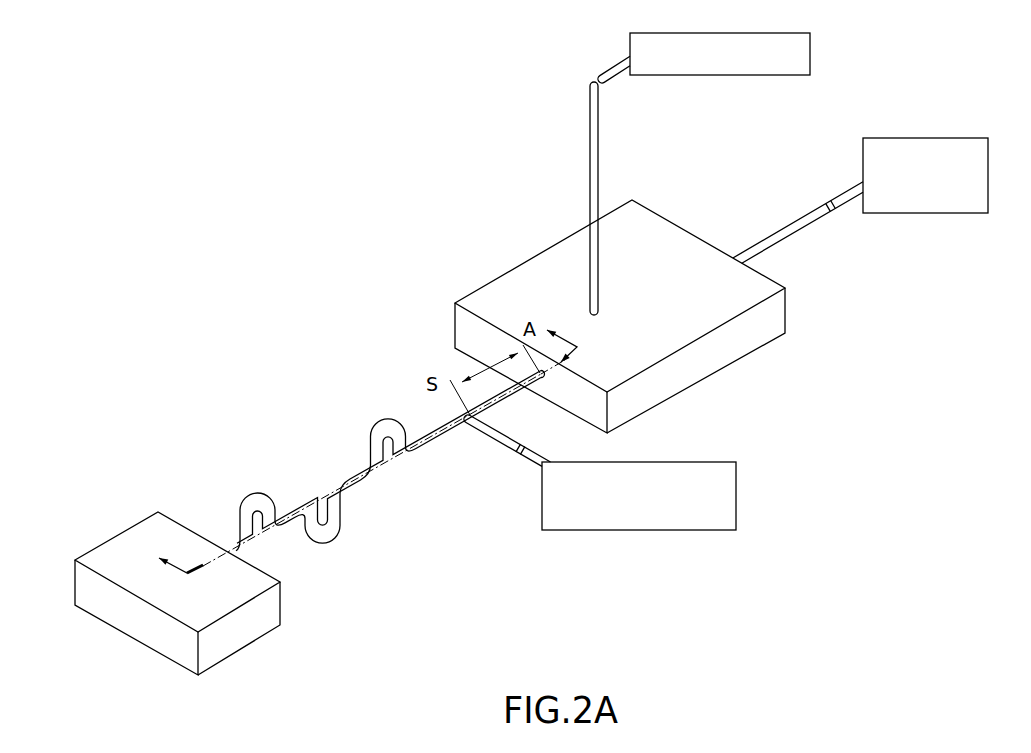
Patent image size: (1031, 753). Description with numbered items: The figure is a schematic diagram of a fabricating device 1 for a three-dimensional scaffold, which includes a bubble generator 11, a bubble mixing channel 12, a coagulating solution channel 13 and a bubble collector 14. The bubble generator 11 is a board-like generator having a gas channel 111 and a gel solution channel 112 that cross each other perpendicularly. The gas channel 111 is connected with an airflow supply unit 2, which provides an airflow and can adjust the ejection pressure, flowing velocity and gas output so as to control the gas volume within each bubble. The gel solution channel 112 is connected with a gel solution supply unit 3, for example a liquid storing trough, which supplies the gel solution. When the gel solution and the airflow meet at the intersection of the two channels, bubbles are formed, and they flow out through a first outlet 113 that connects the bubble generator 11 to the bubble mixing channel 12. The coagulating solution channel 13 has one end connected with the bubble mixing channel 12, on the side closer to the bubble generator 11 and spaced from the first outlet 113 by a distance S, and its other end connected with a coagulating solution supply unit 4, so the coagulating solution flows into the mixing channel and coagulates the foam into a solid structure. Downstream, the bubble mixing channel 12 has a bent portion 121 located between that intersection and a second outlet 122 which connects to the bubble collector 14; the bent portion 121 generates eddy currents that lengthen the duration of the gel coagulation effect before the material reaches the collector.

The fabricating device 1 is at (374, 266).
The airflow supply unit 2 is at (745, 33).
The gel solution supply unit 3 is at (962, 137).
The coagulating solution supply unit 4 is at (737, 495).
The bubble generator 11 is at (555, 267).
The bubble mixing channel 12 is at (382, 470).
The coagulating solution channel 13 is at (502, 437).
The bubble collector 14 is at (273, 611).
The gas channel 111 is at (590, 100).
The gel solution channel 112 is at (793, 223).
The first outlet 113 is at (541, 377).
The bent portion 121 is at (323, 532).
The second outlet 122 is at (235, 546).